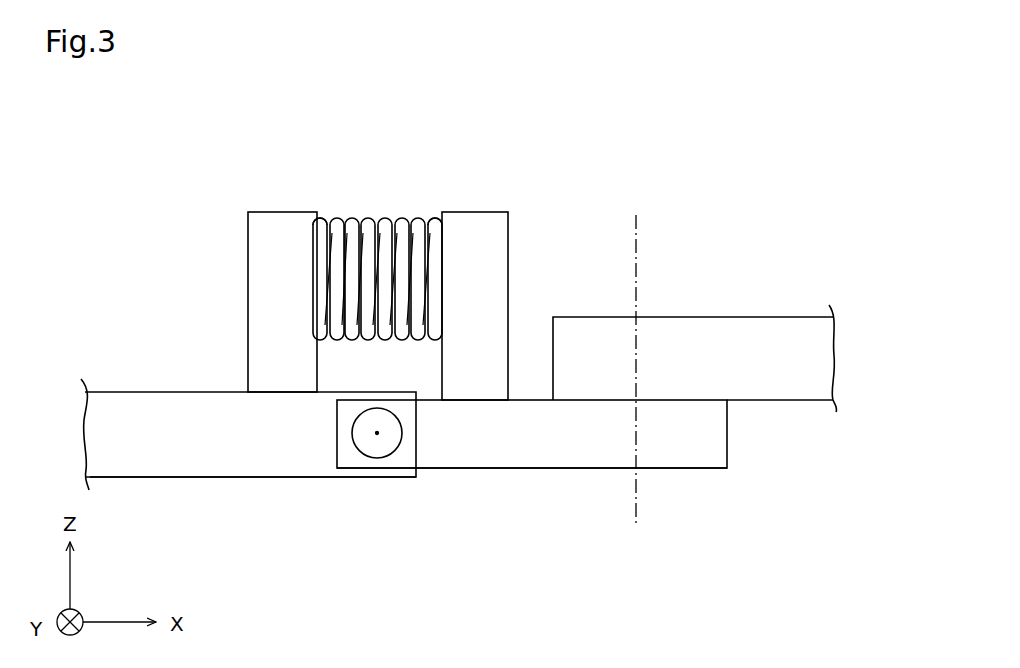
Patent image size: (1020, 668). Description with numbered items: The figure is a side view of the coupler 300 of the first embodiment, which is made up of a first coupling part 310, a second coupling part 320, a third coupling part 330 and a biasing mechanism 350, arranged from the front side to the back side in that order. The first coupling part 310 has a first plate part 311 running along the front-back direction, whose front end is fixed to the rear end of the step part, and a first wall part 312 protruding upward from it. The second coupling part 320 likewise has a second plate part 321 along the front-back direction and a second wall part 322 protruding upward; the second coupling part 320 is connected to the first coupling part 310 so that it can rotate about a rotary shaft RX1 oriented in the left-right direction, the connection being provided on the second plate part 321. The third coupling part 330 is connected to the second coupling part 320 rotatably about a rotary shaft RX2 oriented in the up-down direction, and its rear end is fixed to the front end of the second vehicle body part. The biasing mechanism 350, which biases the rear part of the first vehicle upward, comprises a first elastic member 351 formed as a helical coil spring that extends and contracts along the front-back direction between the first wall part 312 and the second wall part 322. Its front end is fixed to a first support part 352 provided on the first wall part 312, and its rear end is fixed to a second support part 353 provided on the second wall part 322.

The coupler 300 is at (142, 117).
The first coupling part 310 is at (165, 392).
The first plate part 311 is at (225, 477).
The first wall part 312 is at (248, 254).
The second coupling part 320 is at (660, 468).
The second plate part 321 is at (509, 468).
The second wall part 322 is at (508, 258).
The third coupling part 330 is at (690, 317).
The biasing mechanism 350 is at (433, 138).
The first elastic member 351 is at (367, 220).
The first support part 352 is at (337, 217).
The second support part 353 is at (425, 217).
The rotary shaft RX1 is at (377, 437).
The rotary shaft RX2 is at (637, 230).